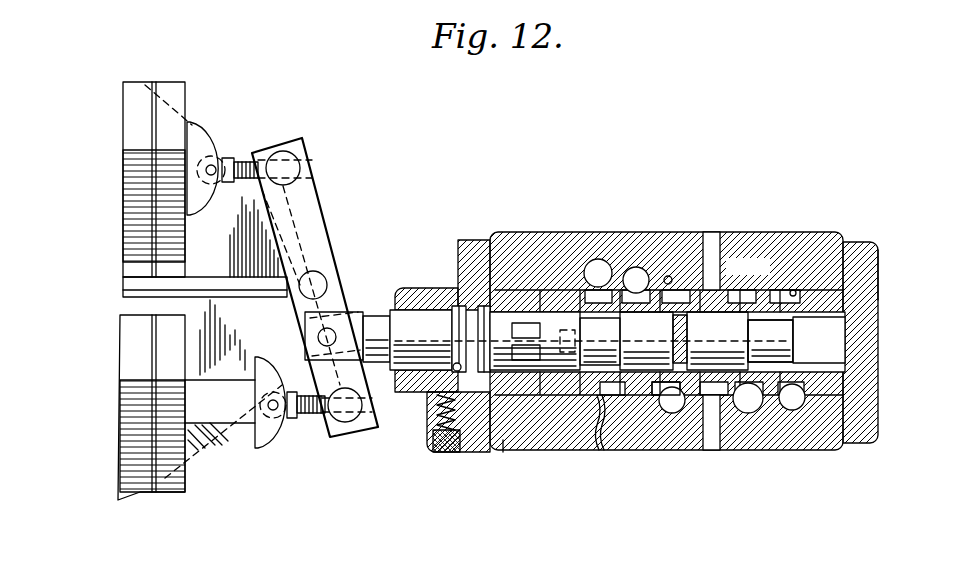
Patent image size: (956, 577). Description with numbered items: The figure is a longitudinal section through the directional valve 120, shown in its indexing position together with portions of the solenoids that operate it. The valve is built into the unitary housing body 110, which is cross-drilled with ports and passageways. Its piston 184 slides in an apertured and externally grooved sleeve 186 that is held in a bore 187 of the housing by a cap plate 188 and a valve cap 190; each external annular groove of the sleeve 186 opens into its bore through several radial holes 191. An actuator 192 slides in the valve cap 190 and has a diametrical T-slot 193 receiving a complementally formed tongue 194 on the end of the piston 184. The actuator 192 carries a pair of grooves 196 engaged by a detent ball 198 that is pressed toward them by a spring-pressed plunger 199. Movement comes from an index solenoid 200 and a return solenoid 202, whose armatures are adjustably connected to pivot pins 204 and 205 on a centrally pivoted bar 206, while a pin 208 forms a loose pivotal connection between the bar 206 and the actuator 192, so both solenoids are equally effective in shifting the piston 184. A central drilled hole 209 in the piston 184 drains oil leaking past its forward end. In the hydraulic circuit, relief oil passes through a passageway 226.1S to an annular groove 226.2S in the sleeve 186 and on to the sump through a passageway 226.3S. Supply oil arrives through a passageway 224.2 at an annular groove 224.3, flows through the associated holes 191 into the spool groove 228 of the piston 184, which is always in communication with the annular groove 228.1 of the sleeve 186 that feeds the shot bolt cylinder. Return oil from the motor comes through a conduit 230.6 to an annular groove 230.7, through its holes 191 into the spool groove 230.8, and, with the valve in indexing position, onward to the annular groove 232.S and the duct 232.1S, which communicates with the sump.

The housing body 110 is at (660, 236).
The directional valve 120 is at (487, 228).
The valve piston 184 is at (766, 320).
The sleeve 186 is at (864, 264).
The bore 187 is at (793, 292).
The cap plate 188 is at (879, 300).
The valve cap 190 is at (465, 272).
The radial holes 191 is at (642, 306).
The actuator 192 is at (409, 318).
The T-slot 193 is at (503, 454).
The tongue 194 is at (519, 322).
The grooves 196 is at (486, 334).
The detent ball 198 is at (456, 370).
The spring-pressed plunger 199 is at (445, 428).
The index solenoid 200 is at (178, 98).
The return solenoid 202 is at (190, 484).
The pivot pin 204 is at (288, 158).
The pivot pin 205 is at (346, 414).
The centrally pivoted bar 206 is at (312, 208).
The pin 208 is at (335, 330).
The central drilled hole 209 is at (790, 346).
The passageway 224.2 is at (683, 412).
The annular groove 224.3 is at (668, 408).
The passageway 226.1S is at (598, 425).
The annular groove 226.2S is at (604, 440).
The passageway 226.3S is at (598, 262).
The spool groove 228 is at (642, 358).
The annular groove 228.1 is at (669, 277).
The conduit 230.6 is at (722, 250).
The annular groove 230.7 is at (748, 267).
The spool groove 230.8 is at (717, 341).
The duct 232.1S is at (746, 410).
The annular groove 232.S is at (756, 412).